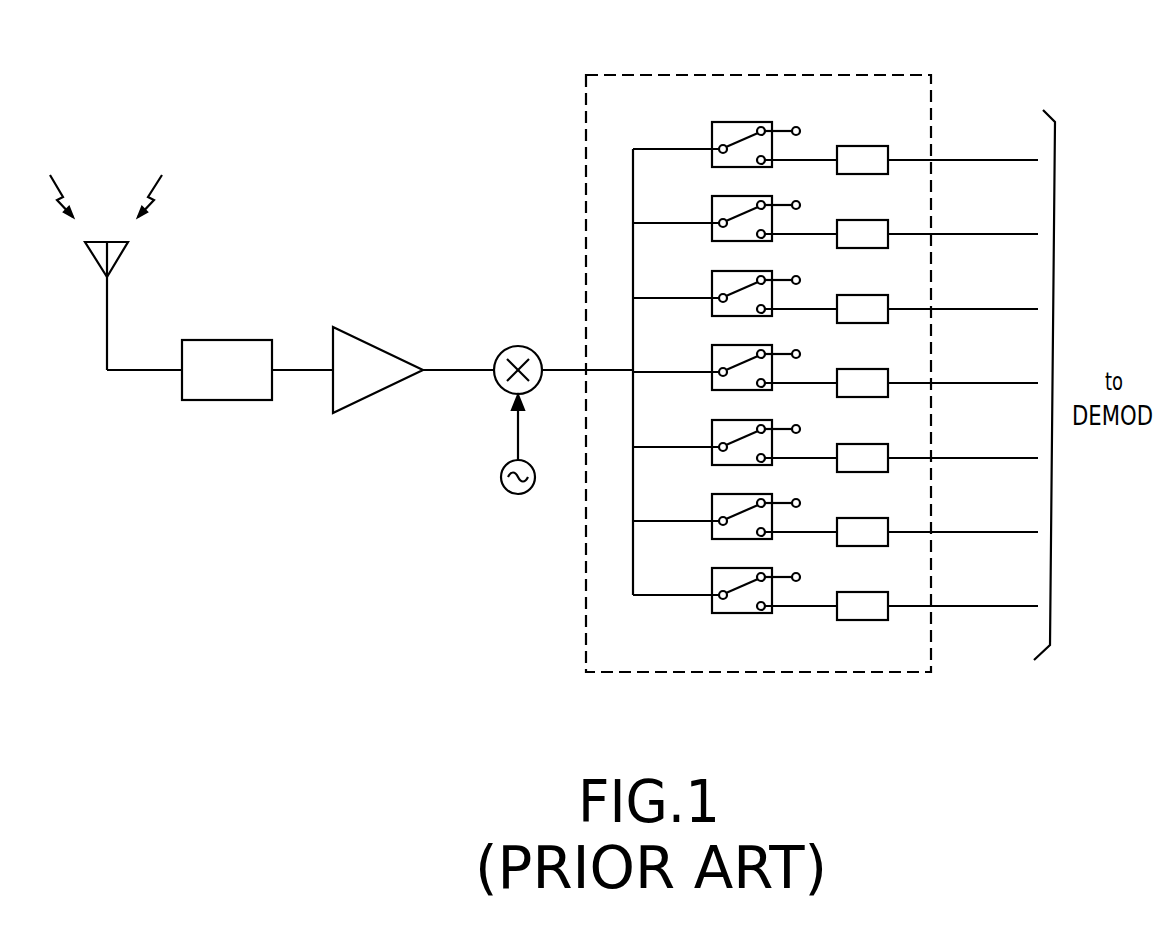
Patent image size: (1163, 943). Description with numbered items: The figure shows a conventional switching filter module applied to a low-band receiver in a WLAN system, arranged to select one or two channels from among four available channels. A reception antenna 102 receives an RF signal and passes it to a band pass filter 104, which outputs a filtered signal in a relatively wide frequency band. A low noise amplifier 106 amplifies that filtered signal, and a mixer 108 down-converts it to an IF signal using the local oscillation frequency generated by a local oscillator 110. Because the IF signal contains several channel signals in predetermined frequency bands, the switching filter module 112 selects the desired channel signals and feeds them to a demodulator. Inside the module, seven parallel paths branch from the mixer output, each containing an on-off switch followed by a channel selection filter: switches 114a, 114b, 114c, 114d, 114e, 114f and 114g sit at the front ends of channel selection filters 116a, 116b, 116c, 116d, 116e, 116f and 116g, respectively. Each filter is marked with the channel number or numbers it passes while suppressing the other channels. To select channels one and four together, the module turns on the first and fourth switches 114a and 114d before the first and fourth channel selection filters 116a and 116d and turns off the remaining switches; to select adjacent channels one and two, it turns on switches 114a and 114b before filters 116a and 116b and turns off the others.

The reception antenna 102 is at (128, 222).
The band pass filter 104 is at (225, 340).
The low noise amplifier 106 is at (380, 345).
The mixer 108 is at (518, 347).
The local oscillator 110 is at (518, 495).
The switching filter module 112 is at (755, 75).
The first switch 114a is at (712, 167).
The second switch 114b is at (735, 241).
The switch 114c is at (735, 316).
The fourth switch 114d is at (735, 390).
The switch 114e is at (735, 465).
The switch 114f is at (735, 539).
The switch 114g is at (735, 613).
The first channel selection filter 116a is at (862, 146).
The second channel selection filter 116b is at (937, 210).
The channel selection filter 116c is at (937, 285).
The fourth channel selection filter 116d is at (937, 359).
The channel selection filter 116e is at (937, 434).
The channel selection filter 116f is at (937, 508).
The channel selection filter 116g is at (937, 582).